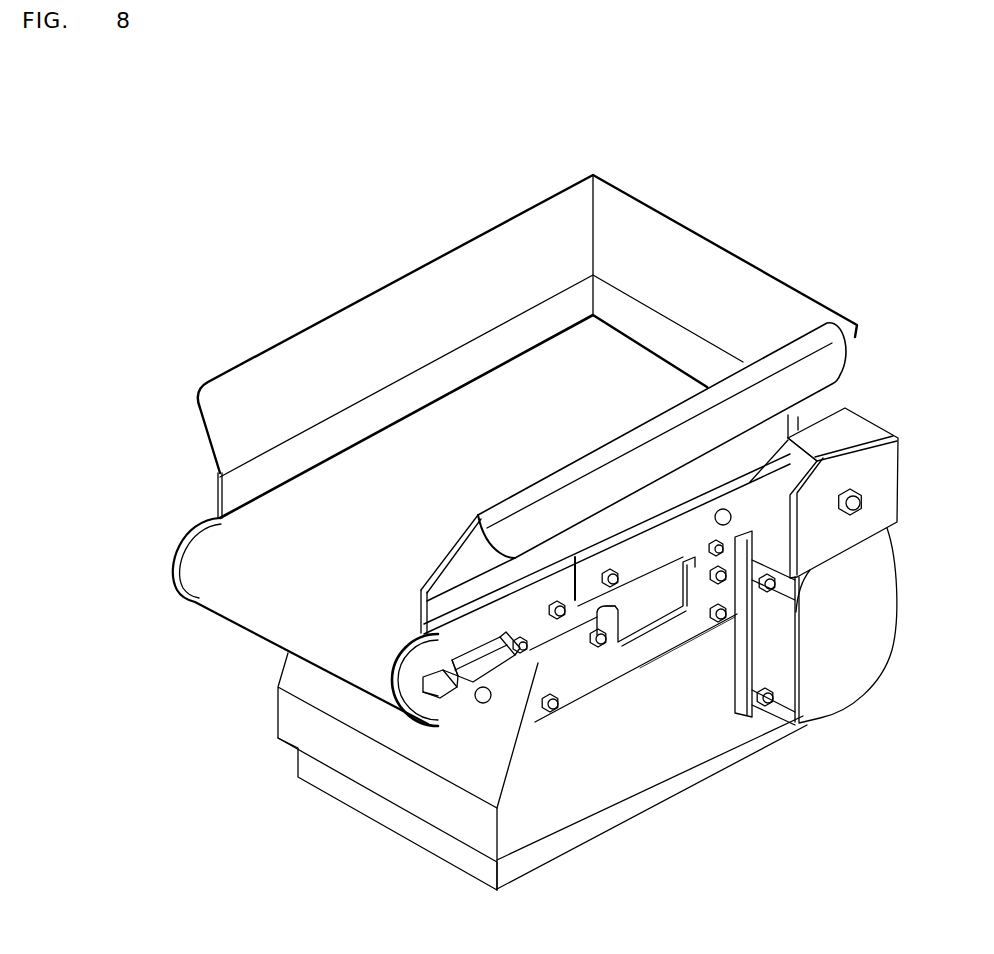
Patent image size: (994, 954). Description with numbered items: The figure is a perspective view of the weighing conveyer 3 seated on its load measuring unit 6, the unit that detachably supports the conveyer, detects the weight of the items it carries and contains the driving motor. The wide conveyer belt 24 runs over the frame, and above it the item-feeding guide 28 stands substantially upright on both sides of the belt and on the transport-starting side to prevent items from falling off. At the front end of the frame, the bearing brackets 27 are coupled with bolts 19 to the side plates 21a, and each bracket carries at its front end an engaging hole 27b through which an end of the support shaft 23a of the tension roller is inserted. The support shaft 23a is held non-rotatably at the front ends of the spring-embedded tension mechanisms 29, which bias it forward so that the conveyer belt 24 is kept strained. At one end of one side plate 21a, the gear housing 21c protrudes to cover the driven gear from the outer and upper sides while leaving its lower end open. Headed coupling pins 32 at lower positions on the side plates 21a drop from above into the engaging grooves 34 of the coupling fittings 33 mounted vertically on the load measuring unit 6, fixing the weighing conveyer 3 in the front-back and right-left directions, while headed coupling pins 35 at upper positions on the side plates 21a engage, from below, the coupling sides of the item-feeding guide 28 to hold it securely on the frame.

The weighing conveyer 3 is at (370, 266).
The item-feeding guide 28 is at (712, 246).
The bolt 19 is at (543, 609).
The conveyer belt 24 is at (247, 617).
The bearing bracket 27 is at (430, 704).
The engaging hole 27b is at (428, 692).
The tension mechanism 29 is at (500, 668).
The support shaft 23a is at (460, 686).
The side plate 21a is at (643, 606).
The coupling fitting 33 is at (672, 643).
The coupling pin 32 is at (599, 648).
The engaging groove 34 is at (604, 603).
The coupling pin 35 is at (617, 573).
The gear housing 21c is at (877, 450).
The load measuring unit 6 is at (562, 808).